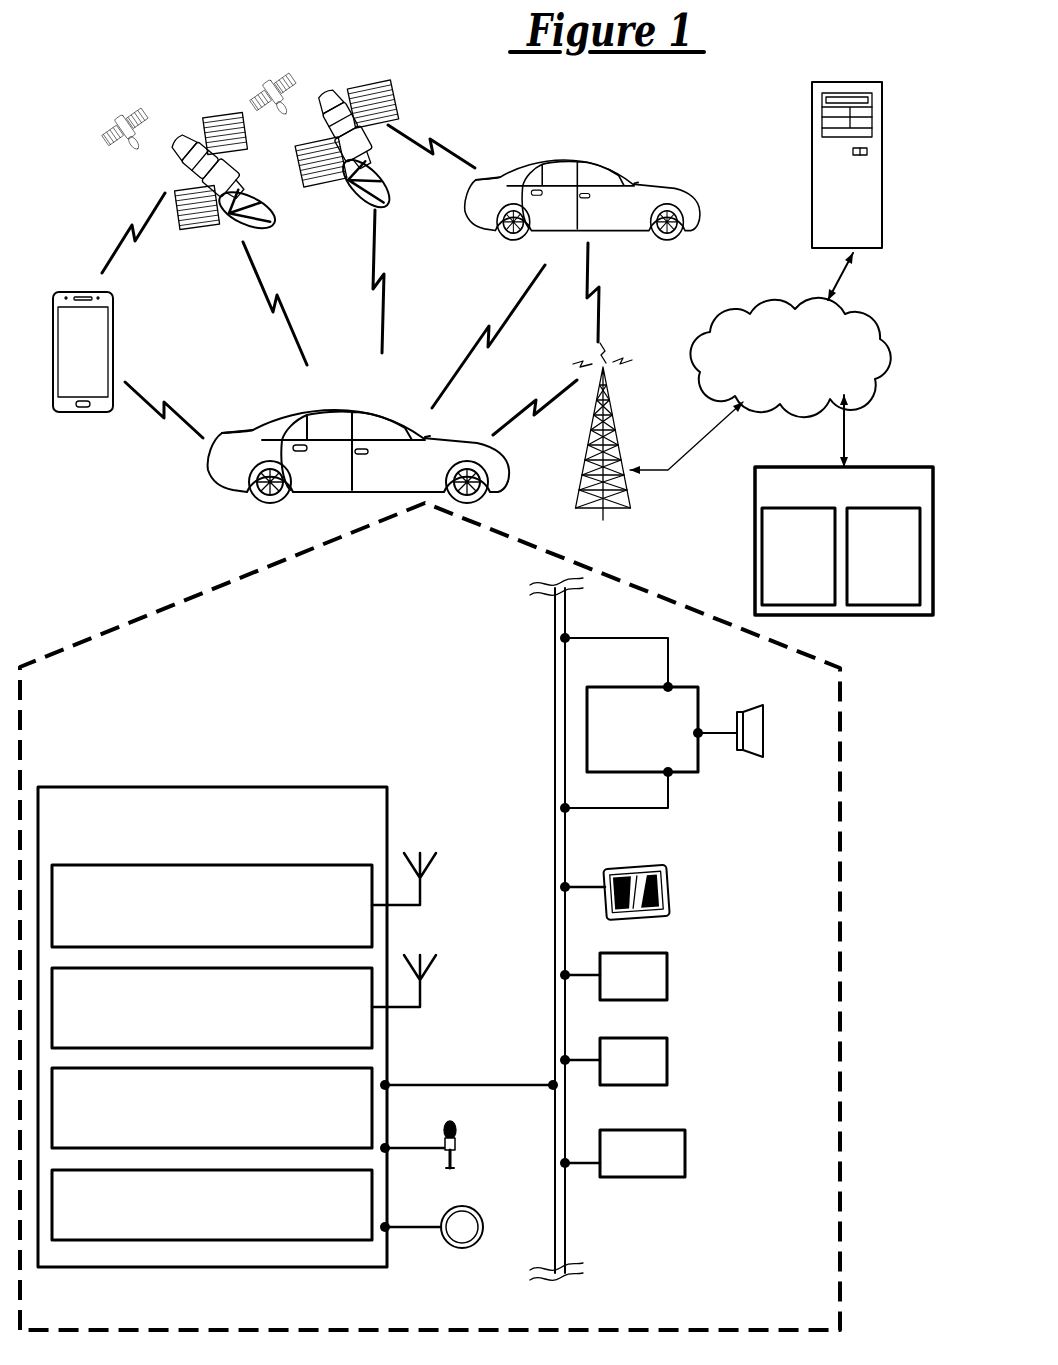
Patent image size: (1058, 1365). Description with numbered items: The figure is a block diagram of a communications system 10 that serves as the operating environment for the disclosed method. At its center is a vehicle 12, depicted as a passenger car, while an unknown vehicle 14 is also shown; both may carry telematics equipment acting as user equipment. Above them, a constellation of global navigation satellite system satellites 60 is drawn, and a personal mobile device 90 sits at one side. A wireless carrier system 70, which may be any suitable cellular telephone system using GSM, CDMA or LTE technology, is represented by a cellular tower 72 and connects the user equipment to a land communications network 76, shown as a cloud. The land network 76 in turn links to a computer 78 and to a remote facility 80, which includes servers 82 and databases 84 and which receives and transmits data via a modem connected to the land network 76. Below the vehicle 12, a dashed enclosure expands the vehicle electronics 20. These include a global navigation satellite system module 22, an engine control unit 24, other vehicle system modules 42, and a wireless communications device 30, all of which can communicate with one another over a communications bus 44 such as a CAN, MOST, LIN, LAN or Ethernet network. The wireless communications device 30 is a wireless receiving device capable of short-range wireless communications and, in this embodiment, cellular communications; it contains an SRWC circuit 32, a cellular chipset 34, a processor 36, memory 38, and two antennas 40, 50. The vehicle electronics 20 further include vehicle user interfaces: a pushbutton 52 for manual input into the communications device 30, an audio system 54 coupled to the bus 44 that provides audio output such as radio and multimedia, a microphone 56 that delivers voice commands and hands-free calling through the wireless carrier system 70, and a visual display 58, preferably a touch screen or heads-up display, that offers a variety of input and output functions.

The communications system 10 is at (800, 42).
The vehicle 12 is at (337, 412).
The unknown vehicle 14 is at (558, 158).
The vehicle electronics 20 is at (840, 1118).
The global navigation satellite system (GNSS) module 22 is at (667, 975).
The engine control unit (ECU) 24 is at (667, 1060).
The wireless communications device 30 is at (87, 787).
The SRWC circuit 32 is at (212, 906).
The cellular chipset 34 is at (212, 1008).
The processor 36 is at (212, 1108).
The memory 38 is at (212, 1205).
The antenna 40 is at (423, 890).
The vehicle system modules (VSMs) 42 is at (685, 1160).
The communications bus 44 is at (565, 1200).
The antenna 50 is at (423, 992).
The pushbutton 52 is at (480, 1210).
The audio system 54 is at (698, 707).
The microphone 56 is at (460, 1140).
The visual display 58 is at (668, 880).
The global navigation satellite system (GNSS) satellites 60 is at (323, 67).
The wireless carrier system 70 is at (660, 500).
The cellular tower 72 is at (612, 407).
The land communications network 76 is at (892, 372).
The computer 78 is at (885, 203).
The remote facility 80 is at (844, 505).
The servers 82 is at (798, 556).
The databases 84 is at (883, 556).
The personal mobile device 90 is at (115, 320).